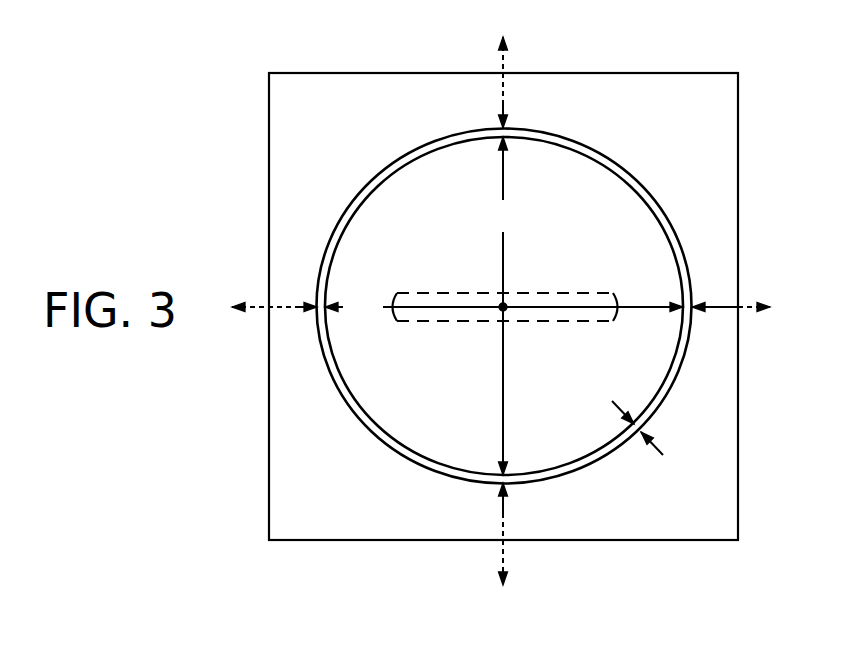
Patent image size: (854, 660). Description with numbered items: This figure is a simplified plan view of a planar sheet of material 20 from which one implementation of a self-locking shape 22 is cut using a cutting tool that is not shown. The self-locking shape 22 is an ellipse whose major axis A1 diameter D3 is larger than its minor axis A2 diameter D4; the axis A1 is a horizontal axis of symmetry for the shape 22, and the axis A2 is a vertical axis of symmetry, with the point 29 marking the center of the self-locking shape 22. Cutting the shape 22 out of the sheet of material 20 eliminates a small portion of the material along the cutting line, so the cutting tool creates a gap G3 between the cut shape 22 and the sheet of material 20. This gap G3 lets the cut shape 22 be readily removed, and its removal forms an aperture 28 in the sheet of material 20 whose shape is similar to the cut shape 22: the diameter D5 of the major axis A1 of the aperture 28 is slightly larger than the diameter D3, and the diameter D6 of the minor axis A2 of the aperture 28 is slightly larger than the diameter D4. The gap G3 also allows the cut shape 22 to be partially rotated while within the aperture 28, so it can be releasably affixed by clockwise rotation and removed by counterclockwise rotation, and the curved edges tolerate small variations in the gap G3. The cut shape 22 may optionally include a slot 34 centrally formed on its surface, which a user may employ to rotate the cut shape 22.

The planar sheet of material 20 is at (721, 104).
The self-locking shape 22 is at (430, 420).
The aperture 28 is at (348, 202).
The point 29 is at (503, 307).
The slot 34 is at (404, 317).
The major axis A1 is at (519, 307).
The minor axis A2 is at (502, 327).
The major axis diameter D3 is at (491, 307).
The minor axis diameter D4 is at (503, 290).
The diameter of the major axis of the aperture D5 is at (720, 307).
The diameter of the minor axis of the aperture D6 is at (503, 513).
The gap G3 is at (655, 442).